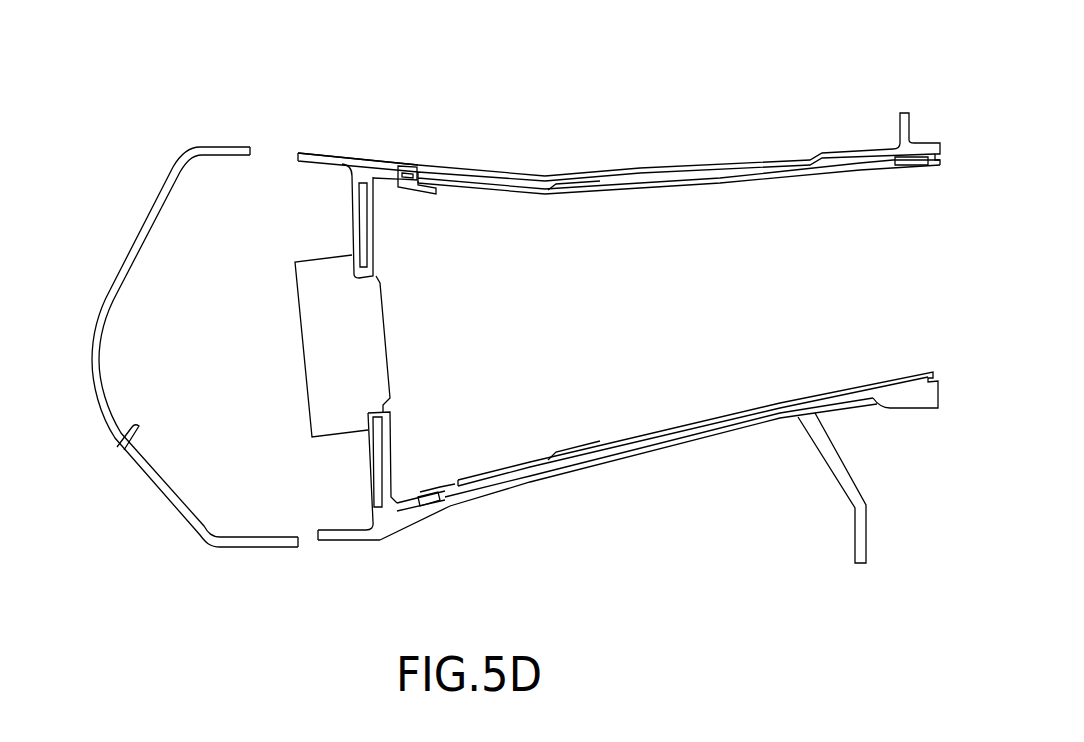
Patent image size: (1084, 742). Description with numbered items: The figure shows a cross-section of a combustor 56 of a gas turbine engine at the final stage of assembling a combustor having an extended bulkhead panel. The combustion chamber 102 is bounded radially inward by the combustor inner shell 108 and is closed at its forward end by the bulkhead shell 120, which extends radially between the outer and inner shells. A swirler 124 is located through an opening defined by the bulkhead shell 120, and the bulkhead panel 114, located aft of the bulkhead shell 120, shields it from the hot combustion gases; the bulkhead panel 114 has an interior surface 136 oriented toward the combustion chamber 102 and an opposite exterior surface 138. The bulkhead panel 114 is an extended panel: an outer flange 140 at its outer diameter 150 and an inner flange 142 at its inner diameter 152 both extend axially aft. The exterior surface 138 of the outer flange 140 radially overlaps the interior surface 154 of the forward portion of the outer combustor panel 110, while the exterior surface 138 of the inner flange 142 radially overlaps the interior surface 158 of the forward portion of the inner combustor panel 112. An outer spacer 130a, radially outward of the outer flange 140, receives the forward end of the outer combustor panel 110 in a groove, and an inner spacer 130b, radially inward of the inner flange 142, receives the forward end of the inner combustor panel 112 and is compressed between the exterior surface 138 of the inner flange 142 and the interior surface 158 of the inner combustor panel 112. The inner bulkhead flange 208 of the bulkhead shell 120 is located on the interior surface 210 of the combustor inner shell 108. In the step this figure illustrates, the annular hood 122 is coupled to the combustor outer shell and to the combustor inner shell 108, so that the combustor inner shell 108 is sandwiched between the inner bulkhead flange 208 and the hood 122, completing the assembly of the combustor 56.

The combustor 56 is at (802, 134).
The combustion chamber 102 is at (807, 310).
The combustor inner shell 108 is at (603, 464).
The outer combustor panel 110 is at (517, 193).
The inner combustor panel 112 is at (728, 414).
The bulkhead panel 114 is at (380, 264).
The bulkhead shell 120 is at (352, 222).
The hood 122 is at (106, 298).
The swirler 124 is at (358, 343).
The outer spacer 130a is at (420, 167).
The inner spacer 130b is at (442, 508).
The interior surface 136 is at (390, 425).
The exterior surface 138 is at (398, 164).
The outer flange 140 is at (410, 188).
The inner flange 142 is at (437, 487).
The outer diameter 150 is at (368, 160).
The inner diameter 152 is at (397, 540).
The interior surface of outer combustor panel 154 is at (467, 187).
The interior surface of inner combustor panel 158 is at (507, 470).
The inner bulkhead flange 208 is at (330, 528).
The interior surface of combustor inner shell 210 is at (357, 527).